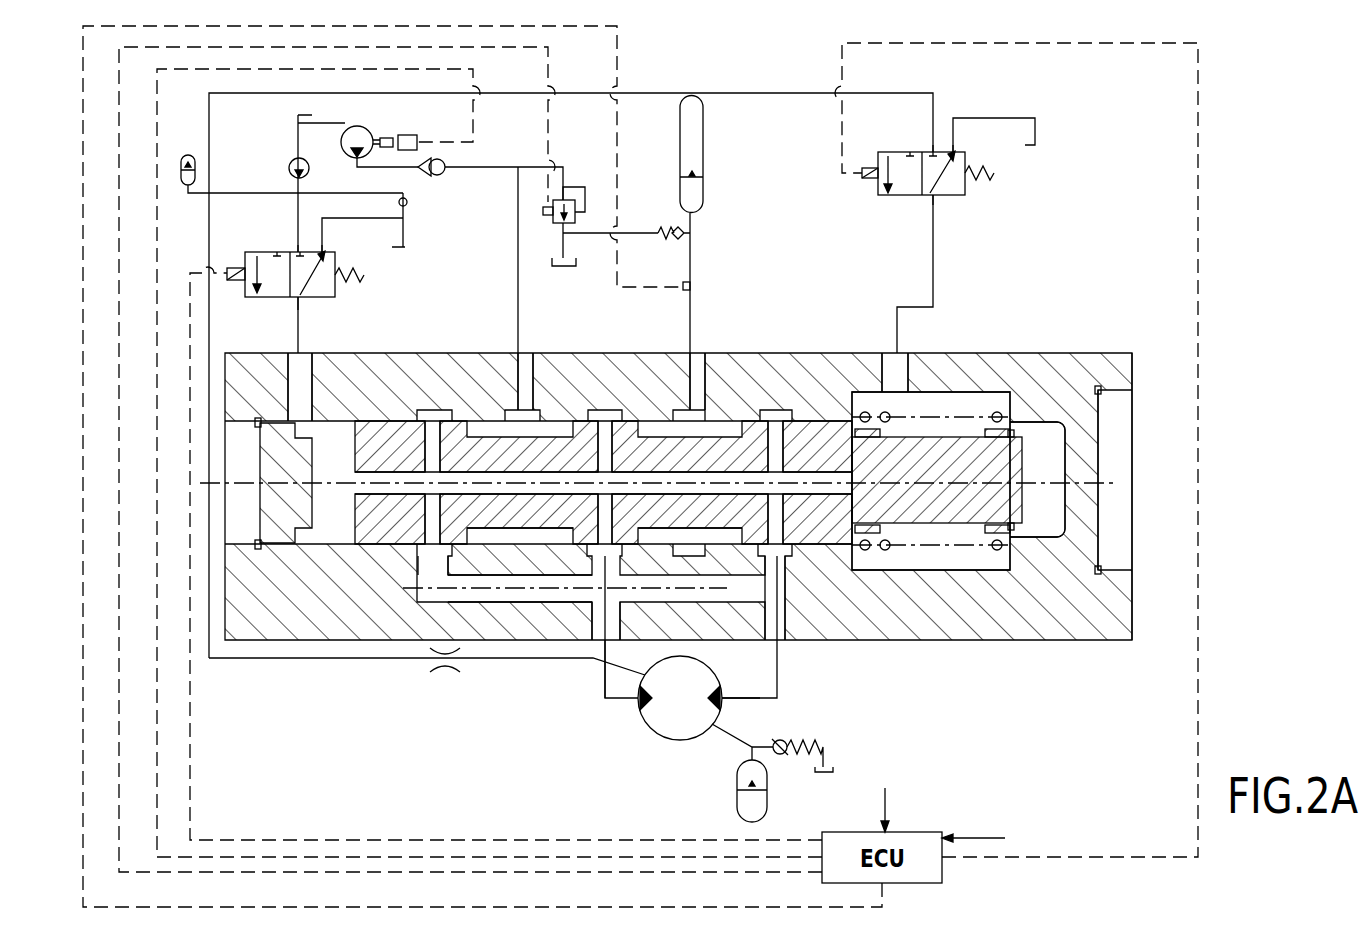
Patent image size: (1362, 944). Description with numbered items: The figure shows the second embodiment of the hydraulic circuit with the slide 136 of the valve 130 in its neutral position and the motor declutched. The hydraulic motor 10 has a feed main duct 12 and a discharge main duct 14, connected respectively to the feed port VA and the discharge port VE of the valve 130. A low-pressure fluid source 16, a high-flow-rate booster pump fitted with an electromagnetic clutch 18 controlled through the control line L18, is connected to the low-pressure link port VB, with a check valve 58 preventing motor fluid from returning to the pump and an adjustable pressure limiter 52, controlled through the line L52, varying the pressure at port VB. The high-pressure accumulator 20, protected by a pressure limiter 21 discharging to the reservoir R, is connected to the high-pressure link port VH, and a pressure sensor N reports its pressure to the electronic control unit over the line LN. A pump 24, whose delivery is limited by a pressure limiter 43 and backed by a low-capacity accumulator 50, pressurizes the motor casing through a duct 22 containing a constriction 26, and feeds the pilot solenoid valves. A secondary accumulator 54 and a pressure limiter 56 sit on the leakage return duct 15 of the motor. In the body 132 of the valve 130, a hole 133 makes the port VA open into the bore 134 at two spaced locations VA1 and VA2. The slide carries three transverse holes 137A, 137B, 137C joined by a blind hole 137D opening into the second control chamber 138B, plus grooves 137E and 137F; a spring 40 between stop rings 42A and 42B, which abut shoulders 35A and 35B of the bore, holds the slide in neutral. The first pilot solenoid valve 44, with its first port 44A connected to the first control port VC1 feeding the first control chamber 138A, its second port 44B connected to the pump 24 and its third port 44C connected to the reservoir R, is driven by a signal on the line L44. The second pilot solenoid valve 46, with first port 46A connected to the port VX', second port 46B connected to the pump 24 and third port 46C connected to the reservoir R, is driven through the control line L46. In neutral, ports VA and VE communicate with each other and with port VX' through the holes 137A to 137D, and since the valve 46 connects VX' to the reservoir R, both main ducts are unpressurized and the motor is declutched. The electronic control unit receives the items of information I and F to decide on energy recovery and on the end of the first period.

The hydraulic motor 10 is at (672, 735).
The feed main duct 12 is at (750, 699).
The discharge main duct 14 is at (616, 700).
The leakage return duct 15 is at (725, 738).
The low-pressure fluid source 16 is at (368, 130).
The electromagnetic clutch 18 is at (412, 134).
The accumulator 20 is at (680, 152).
The pressure limiter 21 is at (675, 228).
The duct 22 is at (520, 660).
The pump 24 is at (289, 166).
The constriction 26 is at (445, 672).
The shoulder 35A is at (860, 562).
The shoulder 35B is at (1008, 562).
The spring 40 is at (1007, 390).
The stop ring 42A is at (878, 392).
The stop ring 42B is at (996, 392).
The pressure limiter 43 is at (408, 212).
The first pilot solenoid valve 44 is at (970, 197).
The first port 44A is at (933, 198).
The second port 44B is at (933, 150).
The third port 44C is at (953, 155).
The second pilot solenoid valve 46 is at (346, 296).
The first port 46A is at (298, 298).
The second port 46B is at (296, 250).
The third port 46C is at (325, 254).
The low-capacity accumulator 50 is at (187, 155).
The adjustable pressure limiter 52 is at (533, 211).
The secondary accumulator 54 is at (735, 803).
The pressure limiter 56 is at (792, 738).
The check valve 58 is at (451, 163).
The valve 130 is at (945, 660).
The body 132 is at (1052, 630).
The hole 133 is at (425, 598).
The bore 134 is at (318, 533).
The slide 136 is at (1010, 505).
The transverse hole 137A is at (775, 455).
The transverse hole 137B is at (608, 512).
The transverse hole 137C is at (437, 512).
The blind hole 137D is at (556, 478).
The groove 137E is at (553, 522).
The groove 137F is at (720, 521).
The first control chamber 138A is at (1050, 460).
The second control chamber 138B is at (340, 440).
The feed port VA is at (780, 622).
The first orifice of port VA VA1 is at (782, 548).
The second orifice of port VA VA2 is at (432, 548).
The low-pressure link port VB is at (550, 353).
The discharge port VE is at (622, 607).
The high-pressure link port VH is at (718, 353).
The first control port VC1 is at (866, 353).
The auxiliary port VX' is at (282, 370).
The pressure sensor N is at (685, 292).
The reservoir R is at (297, 116).
The end-of-first-period item of information F is at (885, 796).
The item of information I is at (973, 837).
The line LN is at (82, 445).
The control line L18 is at (155, 305).
The control line L52 is at (118, 375).
The control line L46 is at (405, 840).
The line L44 is at (1068, 855).